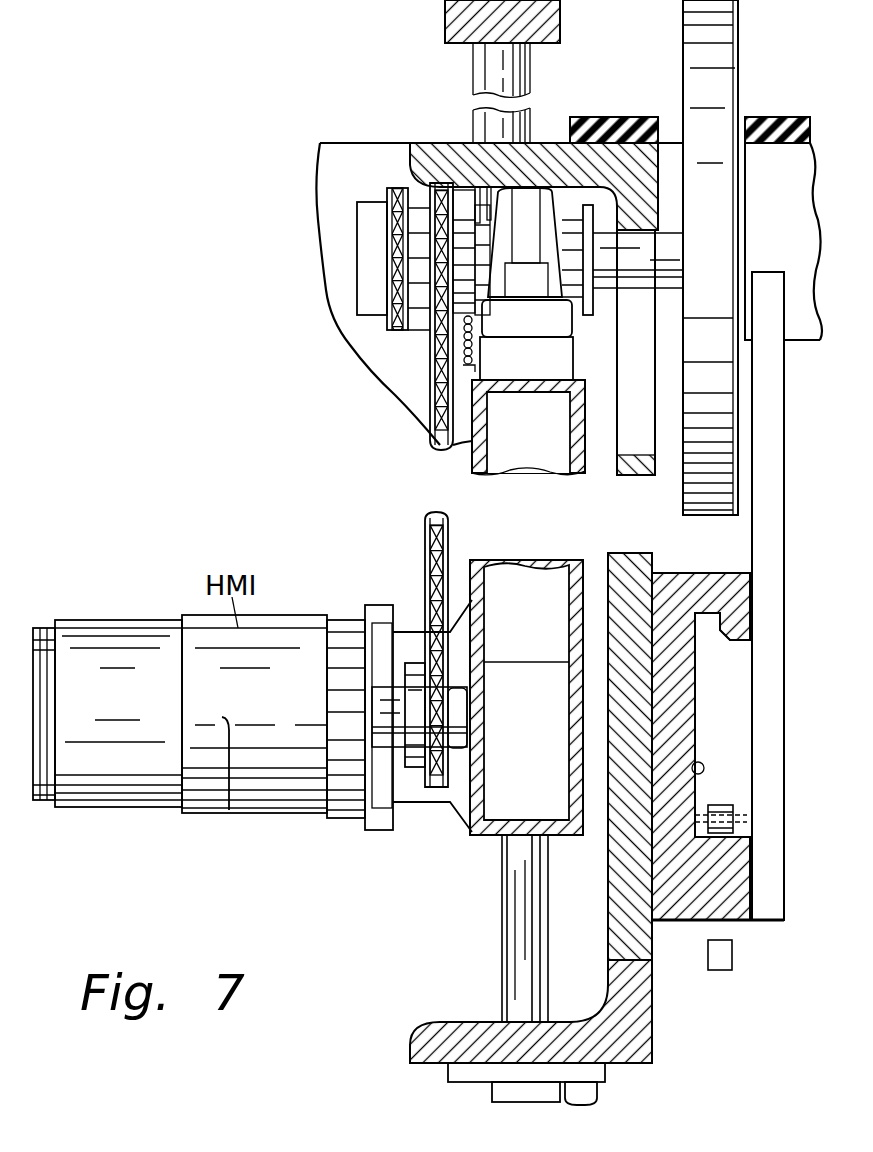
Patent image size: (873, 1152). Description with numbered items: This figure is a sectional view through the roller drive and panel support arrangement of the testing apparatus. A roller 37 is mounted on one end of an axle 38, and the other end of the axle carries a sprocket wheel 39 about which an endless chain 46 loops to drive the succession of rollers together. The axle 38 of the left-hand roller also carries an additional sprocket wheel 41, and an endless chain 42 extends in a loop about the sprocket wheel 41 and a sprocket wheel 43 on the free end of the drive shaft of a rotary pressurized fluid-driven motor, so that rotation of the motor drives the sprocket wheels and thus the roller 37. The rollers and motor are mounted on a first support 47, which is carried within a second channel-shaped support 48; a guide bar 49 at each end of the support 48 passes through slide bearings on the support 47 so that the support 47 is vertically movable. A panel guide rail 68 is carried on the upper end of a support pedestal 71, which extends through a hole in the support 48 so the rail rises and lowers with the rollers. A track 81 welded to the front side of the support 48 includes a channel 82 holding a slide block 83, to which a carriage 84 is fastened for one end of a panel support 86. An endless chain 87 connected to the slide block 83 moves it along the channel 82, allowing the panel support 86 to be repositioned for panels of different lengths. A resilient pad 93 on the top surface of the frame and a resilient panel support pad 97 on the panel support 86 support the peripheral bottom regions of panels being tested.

The roller 37 is at (692, 34).
The axle 38 is at (634, 272).
The sprocket wheel 39 is at (385, 210).
The additional sprocket wheel 41 is at (423, 297).
The endless chain 42 is at (425, 550).
The sprocket wheel 43 is at (420, 655).
The endless chain 46 is at (398, 187).
The first support 47 is at (472, 833).
The channel-shaped support 48 is at (418, 1047).
The guide bar 49 is at (517, 947).
The panel guide rail 68 is at (460, 22).
The support pedestal 71 is at (485, 73).
The track 81 is at (684, 918).
The channel 82 is at (694, 765).
The slide block 83 is at (725, 677).
The carriage 84 is at (768, 722).
The panel support 86 is at (803, 325).
The endless chain 87 is at (745, 826).
The resilient pad 93 is at (598, 121).
The resilient panel support pad 97 is at (772, 128).